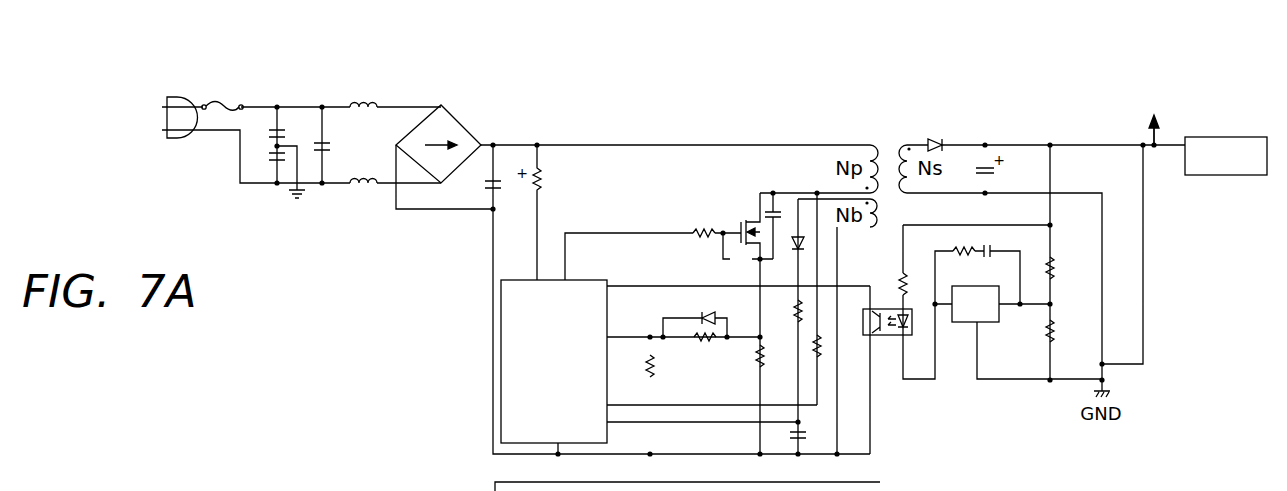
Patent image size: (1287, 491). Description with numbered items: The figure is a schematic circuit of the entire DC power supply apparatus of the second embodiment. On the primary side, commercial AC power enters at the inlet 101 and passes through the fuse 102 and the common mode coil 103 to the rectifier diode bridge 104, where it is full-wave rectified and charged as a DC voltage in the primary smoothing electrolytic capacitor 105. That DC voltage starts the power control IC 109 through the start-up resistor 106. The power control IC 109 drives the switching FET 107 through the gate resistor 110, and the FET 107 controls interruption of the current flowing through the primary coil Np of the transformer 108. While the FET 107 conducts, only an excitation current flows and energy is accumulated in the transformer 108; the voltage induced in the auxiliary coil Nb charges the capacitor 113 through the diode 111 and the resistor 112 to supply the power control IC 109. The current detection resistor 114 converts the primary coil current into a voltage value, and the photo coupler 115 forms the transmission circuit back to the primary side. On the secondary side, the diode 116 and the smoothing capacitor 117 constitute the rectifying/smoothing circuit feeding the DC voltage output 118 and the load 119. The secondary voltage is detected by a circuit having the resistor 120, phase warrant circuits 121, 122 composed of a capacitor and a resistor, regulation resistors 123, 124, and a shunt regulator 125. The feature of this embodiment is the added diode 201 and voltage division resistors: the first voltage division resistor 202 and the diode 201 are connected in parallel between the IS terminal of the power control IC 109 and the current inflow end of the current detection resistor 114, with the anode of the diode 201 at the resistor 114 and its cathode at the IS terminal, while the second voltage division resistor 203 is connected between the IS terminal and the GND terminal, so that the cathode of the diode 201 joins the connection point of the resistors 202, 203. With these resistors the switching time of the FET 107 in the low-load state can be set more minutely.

The inlet 101 is at (178, 139).
The fuse 102 is at (224, 104).
The common mode coil 103 is at (362, 104).
The rectifier diode bridge 104 is at (456, 118).
The primary smoothing electrolytic capacitor 105 is at (479, 187).
The start-up resistor 106 is at (542, 181).
The switching element (FET) 107 is at (740, 221).
The transformer 108 is at (882, 142).
The power control IC 109 is at (584, 279).
The gate resistor 110 is at (697, 229).
The diode 111 is at (797, 234).
The resistor 112 is at (794, 306).
The capacitor 113 is at (791, 434).
The current detection resistor 114 is at (757, 360).
The photo coupler 115 is at (888, 336).
The diode 116 is at (941, 142).
The smoothing capacitor 117 is at (996, 171).
The DC voltage output 118 is at (1158, 134).
The load 119 is at (1229, 176).
The resistor 120 is at (900, 276).
The phase warrant circuit 121 is at (953, 245).
The phase warrant circuit 122 is at (999, 246).
The regulation resistor 123 is at (1054, 265).
The regulation resistor 124 is at (1054, 328).
The shunt regulator 125 is at (986, 322).
The diode 201 is at (702, 311).
The first voltage division resistor 202 is at (702, 346).
The second voltage division resistor 203 is at (646, 354).